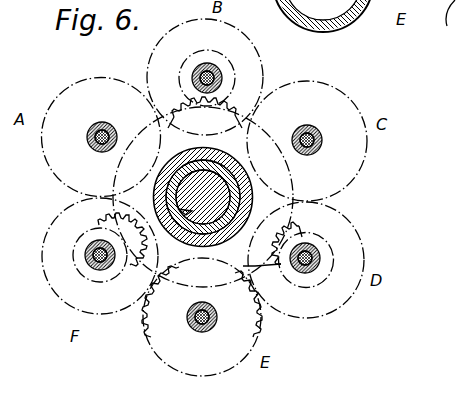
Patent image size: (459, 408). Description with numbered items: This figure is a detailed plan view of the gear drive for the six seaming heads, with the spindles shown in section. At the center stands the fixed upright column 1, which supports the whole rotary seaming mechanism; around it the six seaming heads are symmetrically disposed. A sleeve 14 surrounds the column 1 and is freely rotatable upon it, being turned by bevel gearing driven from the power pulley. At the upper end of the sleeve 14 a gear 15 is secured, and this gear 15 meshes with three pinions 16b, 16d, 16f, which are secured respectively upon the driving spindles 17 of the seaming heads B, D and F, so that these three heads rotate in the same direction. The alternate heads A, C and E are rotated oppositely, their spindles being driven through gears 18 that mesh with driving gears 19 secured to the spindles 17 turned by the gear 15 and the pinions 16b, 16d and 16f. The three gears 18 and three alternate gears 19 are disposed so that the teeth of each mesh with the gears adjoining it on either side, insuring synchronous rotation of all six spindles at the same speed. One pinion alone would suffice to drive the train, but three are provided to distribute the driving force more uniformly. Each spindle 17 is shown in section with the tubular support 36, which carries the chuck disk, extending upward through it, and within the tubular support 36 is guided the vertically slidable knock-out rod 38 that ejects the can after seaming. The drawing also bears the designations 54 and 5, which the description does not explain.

The fixed upright column 1 is at (212, 186).
The sleeve 14 is at (232, 187).
The gear 15 is at (200, 181).
The pinion 16b is at (222, 92).
The pinion 16d is at (302, 237).
The pinion 16f is at (85, 256).
The driving spindle 17 is at (89, 128).
The gear 18 is at (65, 92).
The driving gear 19 is at (192, 21).
The tubular support 36 is at (106, 123).
The knock-out rod 38 is at (103, 152).
The ring gear segment 54 is at (333, 12).
The frame 5 is at (451, 21).